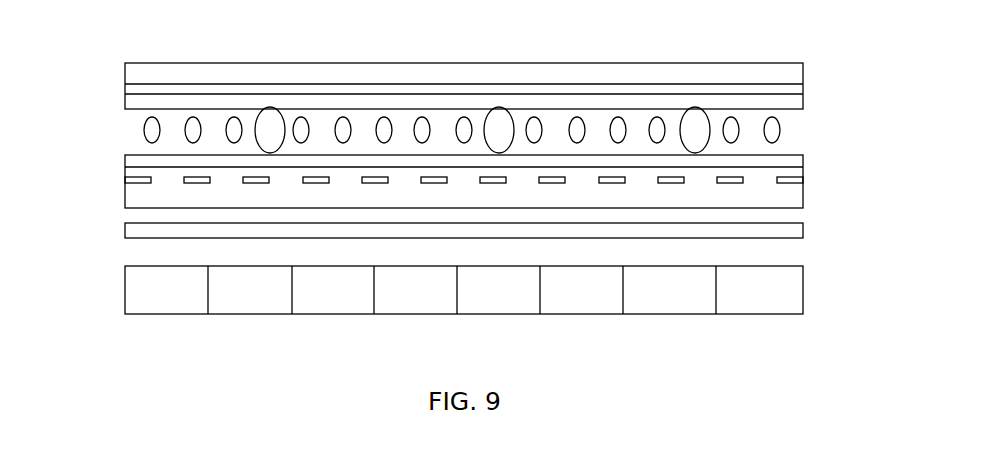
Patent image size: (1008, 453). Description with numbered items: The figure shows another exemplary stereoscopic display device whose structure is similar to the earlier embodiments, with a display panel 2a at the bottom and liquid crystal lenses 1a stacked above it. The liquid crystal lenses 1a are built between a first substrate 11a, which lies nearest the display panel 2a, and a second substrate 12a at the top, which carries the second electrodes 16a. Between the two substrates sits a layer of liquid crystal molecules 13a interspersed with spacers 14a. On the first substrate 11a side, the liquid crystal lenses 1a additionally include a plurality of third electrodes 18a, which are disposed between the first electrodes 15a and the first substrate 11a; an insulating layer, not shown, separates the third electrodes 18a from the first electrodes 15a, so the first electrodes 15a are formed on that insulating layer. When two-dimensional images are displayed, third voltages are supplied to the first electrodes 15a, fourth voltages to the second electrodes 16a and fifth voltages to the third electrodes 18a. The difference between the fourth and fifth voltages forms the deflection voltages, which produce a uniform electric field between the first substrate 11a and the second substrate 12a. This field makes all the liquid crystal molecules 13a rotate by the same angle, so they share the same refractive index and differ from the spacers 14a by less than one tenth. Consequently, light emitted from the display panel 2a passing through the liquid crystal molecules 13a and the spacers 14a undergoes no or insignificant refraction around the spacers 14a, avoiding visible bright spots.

The liquid crystal lenses 1a is at (812, 144).
The display panel 2a is at (788, 294).
The first substrate 11a is at (788, 231).
The second substrate 12a is at (127, 77).
The liquid crystal molecules 13a is at (143, 131).
The spacers 14a is at (277, 123).
The first electrodes 15a is at (128, 179).
The second electrodes 16a is at (128, 88).
The third electrodes 18a is at (132, 198).